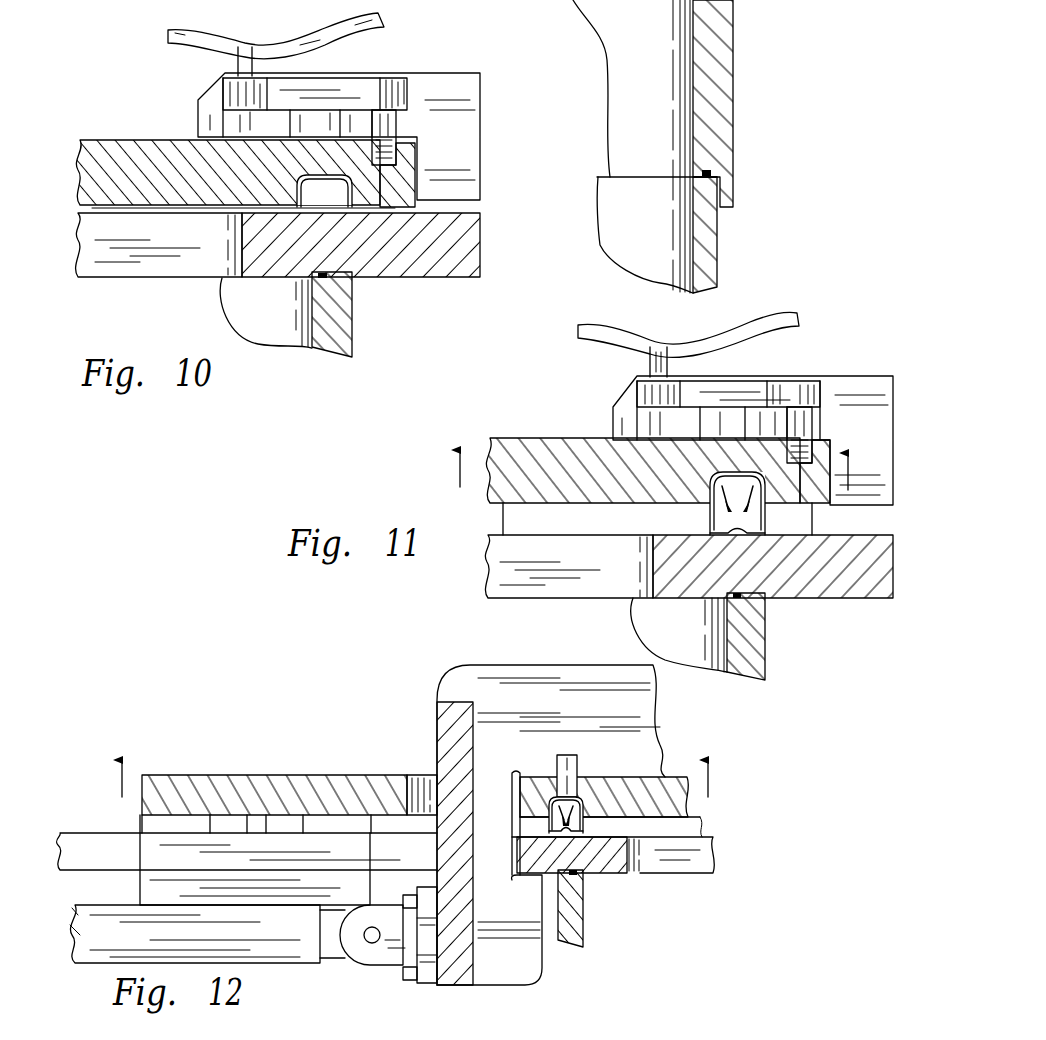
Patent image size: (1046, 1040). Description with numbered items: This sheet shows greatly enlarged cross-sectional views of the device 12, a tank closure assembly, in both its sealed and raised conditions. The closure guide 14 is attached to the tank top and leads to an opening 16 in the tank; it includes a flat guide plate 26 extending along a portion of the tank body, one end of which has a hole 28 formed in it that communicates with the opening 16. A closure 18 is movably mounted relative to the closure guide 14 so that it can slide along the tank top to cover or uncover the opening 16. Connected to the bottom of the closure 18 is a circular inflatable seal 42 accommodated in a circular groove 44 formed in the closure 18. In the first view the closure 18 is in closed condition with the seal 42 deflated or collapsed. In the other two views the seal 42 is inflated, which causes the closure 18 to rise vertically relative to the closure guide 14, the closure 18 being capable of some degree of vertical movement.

In FIG. 10, the device 12 is at (441, 284).
In FIG. 11, the device 12 is at (823, 372).
In FIG. 12, the device 12 is at (428, 731).
In FIG. 10, the closure guide 14 is at (115, 268).
In FIG. 11, the closure guide 14 is at (840, 596).
In FIG. 12, the closure guide 14 is at (222, 778).
In FIG. 10, the opening 16 is at (313, 328).
In FIG. 11, the opening 16 is at (693, 92).
In FIG. 12, the opening 16 is at (583, 947).
In FIG. 10, the closure 18 is at (133, 152).
In FIG. 11, the closure 18 is at (540, 440).
In FIG. 12, the closure 18 is at (655, 778).
In FIG. 12, the flat guide plate 26 is at (605, 873).
In FIG. 10, the hole 28 is at (155, 268).
In FIG. 11, the hole 28 is at (548, 583).
In FIG. 12, the hole 28 is at (688, 857).
In FIG. 10, the inflatable seal 42 is at (304, 199).
In FIG. 11, the inflatable seal 42 is at (710, 518).
In FIG. 12, the inflatable seal 42 is at (549, 828).
In FIG. 10, the circular groove 44 is at (300, 175).
In FIG. 11, the circular groove 44 is at (715, 470).
In FIG. 12, the circular groove 44 is at (553, 797).